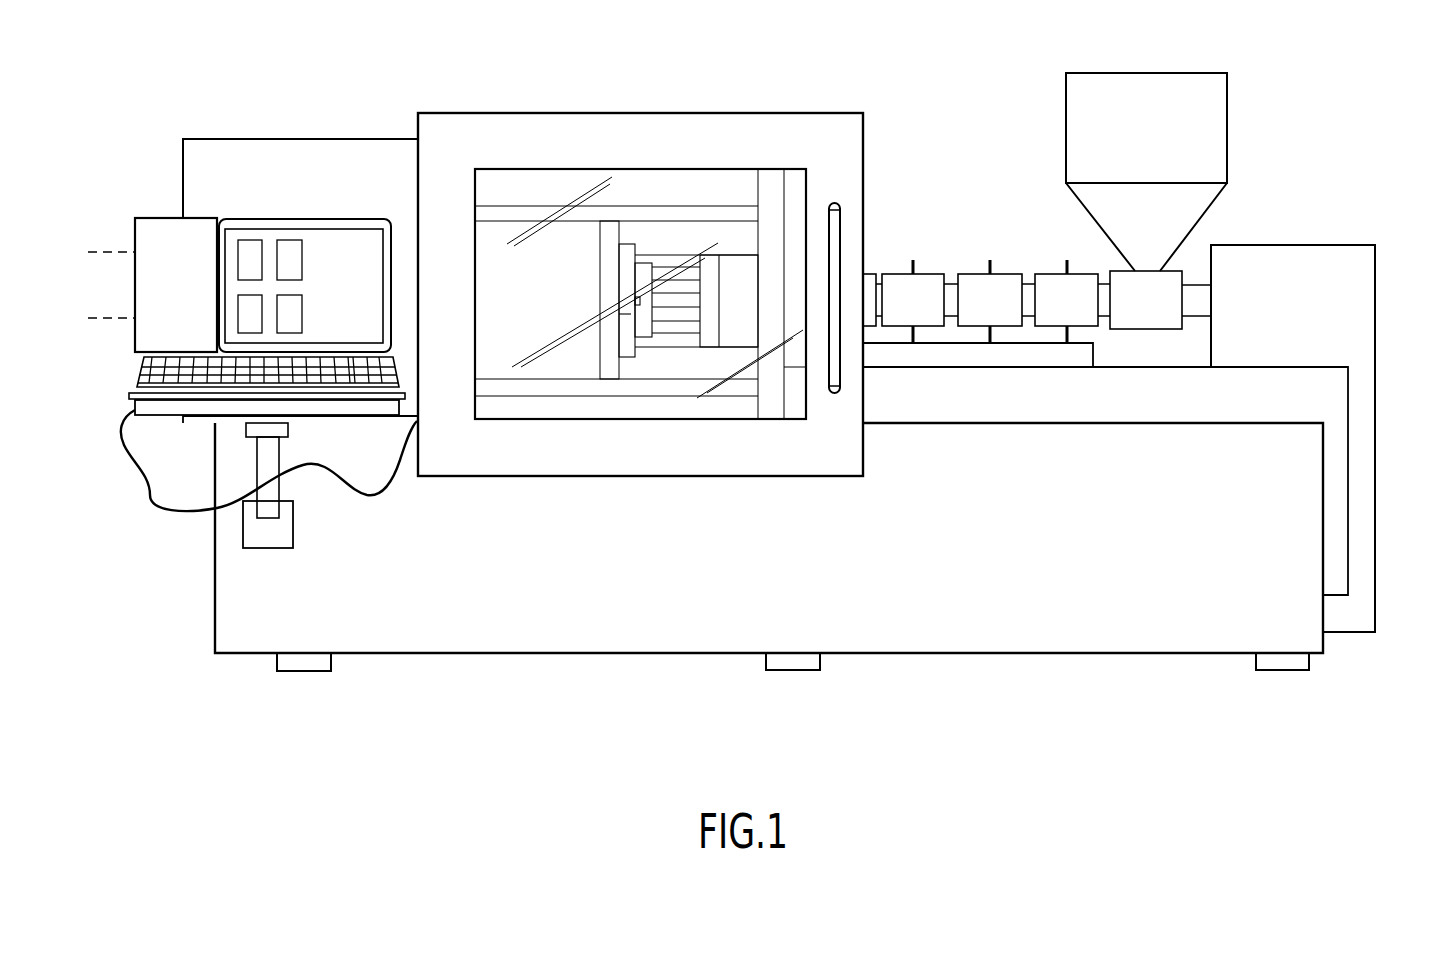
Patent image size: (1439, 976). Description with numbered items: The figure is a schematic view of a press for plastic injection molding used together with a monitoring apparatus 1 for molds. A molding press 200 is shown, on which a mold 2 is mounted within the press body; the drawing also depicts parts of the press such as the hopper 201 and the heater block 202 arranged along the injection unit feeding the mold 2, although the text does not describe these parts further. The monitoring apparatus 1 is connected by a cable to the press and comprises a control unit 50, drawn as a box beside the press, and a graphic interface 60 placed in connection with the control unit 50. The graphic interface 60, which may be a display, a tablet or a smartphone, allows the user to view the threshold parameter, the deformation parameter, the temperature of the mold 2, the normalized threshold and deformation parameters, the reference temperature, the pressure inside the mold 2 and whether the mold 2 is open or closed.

The monitoring apparatus 1 is at (124, 447).
The mold 2 is at (720, 238).
The control unit 50 is at (192, 303).
The graphic interface 60 is at (347, 258).
The molding press 200 is at (1343, 102).
The hopper 201 is at (1129, 137).
The heating cylinder block 202 is at (902, 298).